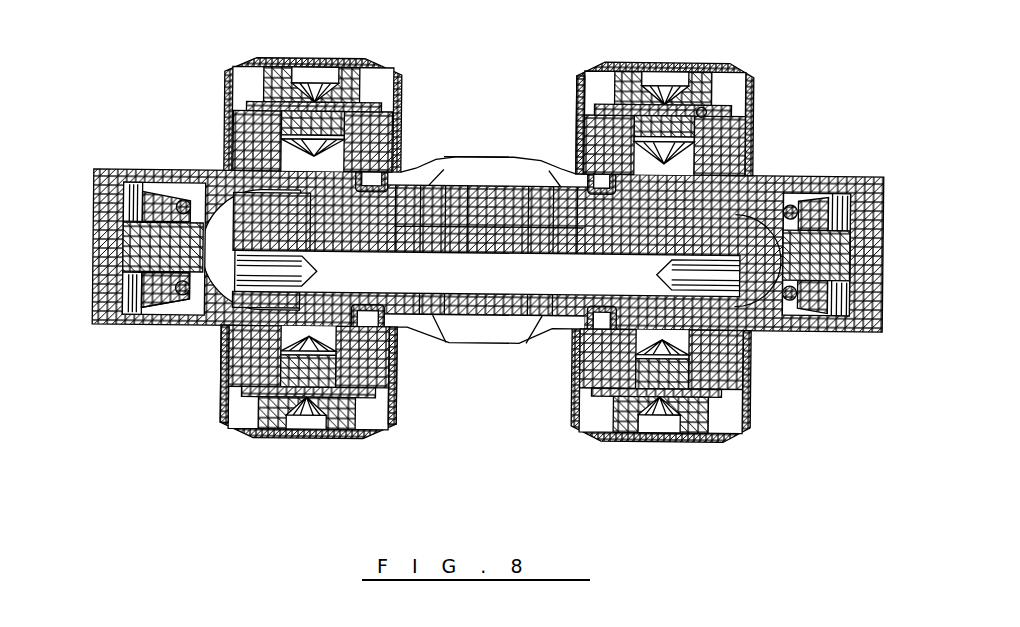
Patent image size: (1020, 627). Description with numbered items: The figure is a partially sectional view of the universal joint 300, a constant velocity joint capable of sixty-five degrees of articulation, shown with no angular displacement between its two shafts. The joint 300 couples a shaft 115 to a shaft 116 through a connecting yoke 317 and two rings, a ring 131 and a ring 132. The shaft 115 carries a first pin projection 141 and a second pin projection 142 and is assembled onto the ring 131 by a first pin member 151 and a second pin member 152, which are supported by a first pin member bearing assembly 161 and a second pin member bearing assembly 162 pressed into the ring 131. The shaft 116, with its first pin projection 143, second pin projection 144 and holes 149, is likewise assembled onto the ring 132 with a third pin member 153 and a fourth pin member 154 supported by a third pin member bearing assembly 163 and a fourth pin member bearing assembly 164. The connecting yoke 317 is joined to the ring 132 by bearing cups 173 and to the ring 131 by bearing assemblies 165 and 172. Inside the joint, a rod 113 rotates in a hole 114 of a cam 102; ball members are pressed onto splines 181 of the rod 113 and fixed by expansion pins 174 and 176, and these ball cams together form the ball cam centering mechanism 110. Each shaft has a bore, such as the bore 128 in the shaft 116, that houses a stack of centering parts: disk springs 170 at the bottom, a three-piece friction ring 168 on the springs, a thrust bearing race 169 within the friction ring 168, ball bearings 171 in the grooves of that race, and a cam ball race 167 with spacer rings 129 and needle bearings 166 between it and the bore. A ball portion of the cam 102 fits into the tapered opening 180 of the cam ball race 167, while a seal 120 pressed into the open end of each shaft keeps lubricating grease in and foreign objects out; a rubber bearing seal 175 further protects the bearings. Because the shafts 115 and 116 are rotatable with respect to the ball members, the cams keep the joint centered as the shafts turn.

The cam 102 is at (468, 200).
The ball cam centering mechanism 110 is at (632, 503).
The rod 113 is at (572, 262).
The hole 114 is at (480, 240).
The shaft 115 is at (103, 168).
The shaft 116 is at (863, 312).
The seal 120 is at (403, 167).
The bore in shaft 116 128 is at (750, 183).
The spacer rings 129 is at (375, 338).
The ring 131 is at (370, 438).
The ring 132 is at (590, 70).
The first pin projection of shaft 115 141 is at (260, 130).
The second pin projection of shaft 115 142 is at (225, 421).
The first pin projection of shaft 116 143 is at (710, 137).
The second pin projection of shaft 116 144 is at (712, 364).
The holes in shaft 116 149 is at (705, 112).
The first pin member 151 is at (342, 74).
The second pin member 152 is at (263, 432).
The third pin member 153 is at (723, 66).
The fourth pin member 154 is at (690, 446).
The first pin member bearing assembly 161 is at (280, 58).
The second pin member bearing assembly 162 is at (302, 440).
The third pin member bearing assembly 163 is at (688, 60).
The fourth pin member bearing assembly 164 is at (625, 446).
The bearing assembly 165 is at (245, 433).
The needle bearings 166 is at (240, 388).
The cam ball race 167 is at (185, 298).
The three-piece friction ring 168 is at (152, 307).
The thrust bearing race 169 is at (160, 283).
The disk springs 170 is at (147, 202).
The ball bearings 171 is at (182, 200).
The bearing assembly 172 is at (610, 145).
The bearing cups 173 is at (697, 360).
The expansion pin 174 is at (223, 335).
The bearing seal 175 is at (388, 165).
The expansion pin 176 is at (790, 300).
The tapered opening of cam ball race 180 is at (400, 332).
The splines on rod 113 181 is at (848, 238).
The universal joint 300 is at (325, 533).
The connecting yoke 317 is at (457, 163).